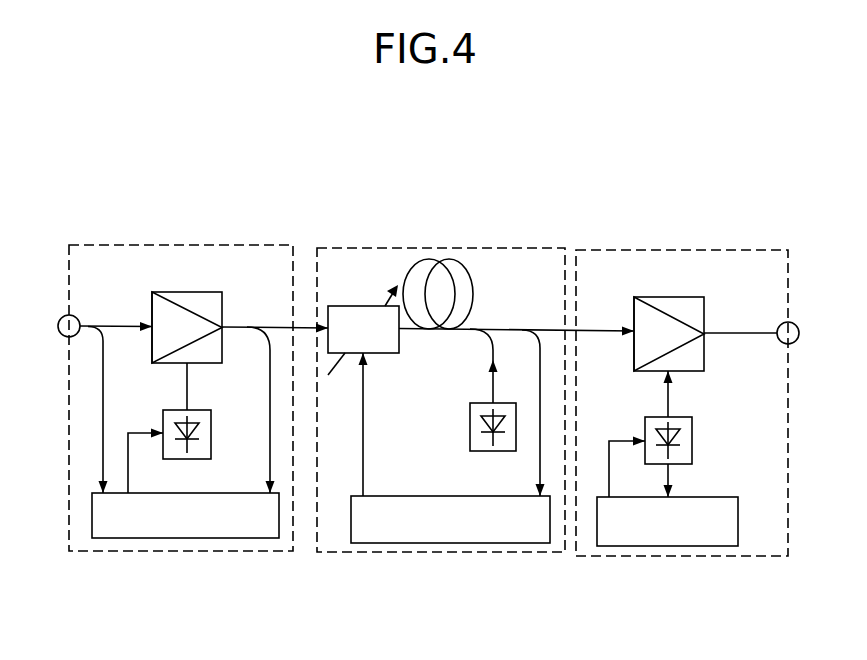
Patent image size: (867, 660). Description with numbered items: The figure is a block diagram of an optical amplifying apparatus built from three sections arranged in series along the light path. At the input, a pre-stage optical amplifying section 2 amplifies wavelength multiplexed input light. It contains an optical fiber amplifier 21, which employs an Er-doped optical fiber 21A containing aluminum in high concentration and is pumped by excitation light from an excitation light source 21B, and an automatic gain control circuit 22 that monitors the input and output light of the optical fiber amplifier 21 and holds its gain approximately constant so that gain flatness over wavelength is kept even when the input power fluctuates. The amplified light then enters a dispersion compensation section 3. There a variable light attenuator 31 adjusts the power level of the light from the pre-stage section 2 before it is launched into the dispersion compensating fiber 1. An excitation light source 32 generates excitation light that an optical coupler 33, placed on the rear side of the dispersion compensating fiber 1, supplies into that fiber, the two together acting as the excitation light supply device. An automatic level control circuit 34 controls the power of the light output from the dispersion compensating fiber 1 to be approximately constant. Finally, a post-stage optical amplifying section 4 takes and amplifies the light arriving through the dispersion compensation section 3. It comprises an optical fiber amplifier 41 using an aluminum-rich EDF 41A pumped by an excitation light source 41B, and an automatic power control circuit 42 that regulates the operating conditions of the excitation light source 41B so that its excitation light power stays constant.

The dispersion compensating fiber 1 is at (450, 258).
The pre-stage optical amplifying section 2 is at (103, 245).
The optical fiber amplifier 21 is at (237, 275).
The Er-doped optical fiber 21A is at (187, 292).
The excitation light source 21B is at (211, 433).
The automatic gain control circuit 22 is at (187, 538).
The dispersion compensation section 3 is at (352, 248).
The variable light attenuator 31 is at (362, 306).
The excitation light source 32 is at (470, 426).
The optical coupler 33 is at (470, 329).
The automatic level control circuit 34 is at (458, 543).
The post-stage optical amplifying section 4 is at (752, 250).
The optical fiber amplifier 41 is at (702, 284).
The Er-doped optical fiber 41A is at (670, 297).
The excitation light source 41B is at (692, 440).
The automatic power control circuit 42 is at (667, 546).